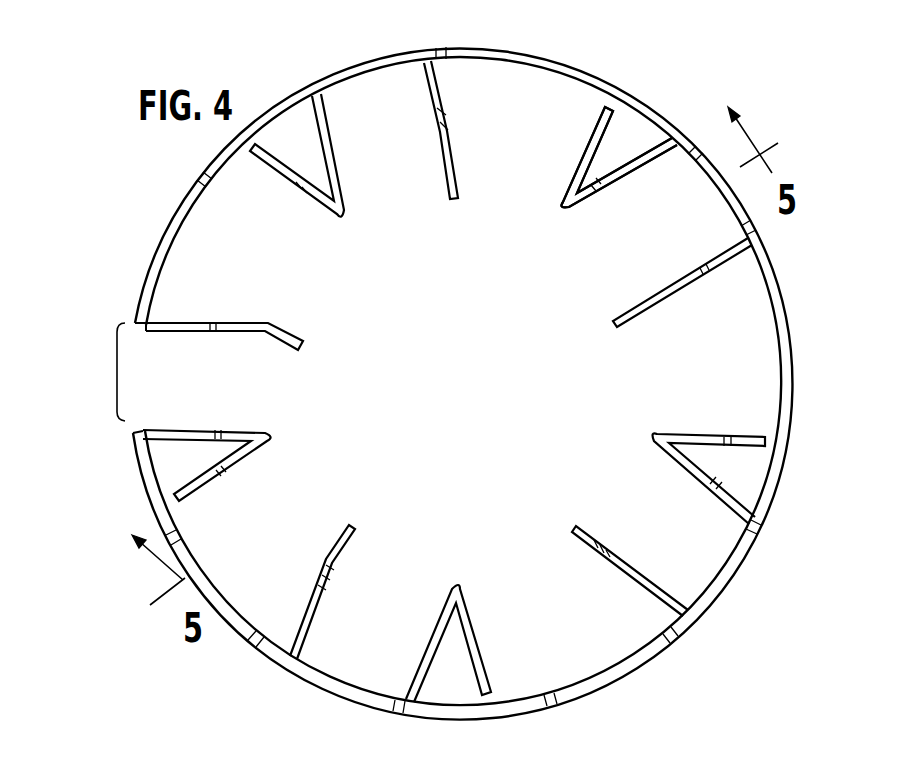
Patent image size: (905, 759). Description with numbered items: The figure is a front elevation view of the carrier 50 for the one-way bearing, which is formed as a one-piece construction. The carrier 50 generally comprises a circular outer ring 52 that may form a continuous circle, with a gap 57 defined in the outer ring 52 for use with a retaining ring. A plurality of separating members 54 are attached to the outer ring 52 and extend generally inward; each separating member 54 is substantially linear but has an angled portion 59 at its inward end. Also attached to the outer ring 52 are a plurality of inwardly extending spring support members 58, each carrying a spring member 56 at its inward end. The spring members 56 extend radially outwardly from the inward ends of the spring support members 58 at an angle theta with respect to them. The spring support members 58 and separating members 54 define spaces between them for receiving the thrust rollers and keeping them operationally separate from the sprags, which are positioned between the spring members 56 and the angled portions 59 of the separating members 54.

The carrier 50 is at (793, 321).
The outer ring 52 is at (794, 447).
The separating member 54 is at (592, 540).
The spring member 56 is at (578, 120).
The gap 57 is at (117, 372).
The spring support member 58 is at (650, 165).
The angled portion 59 is at (623, 324).